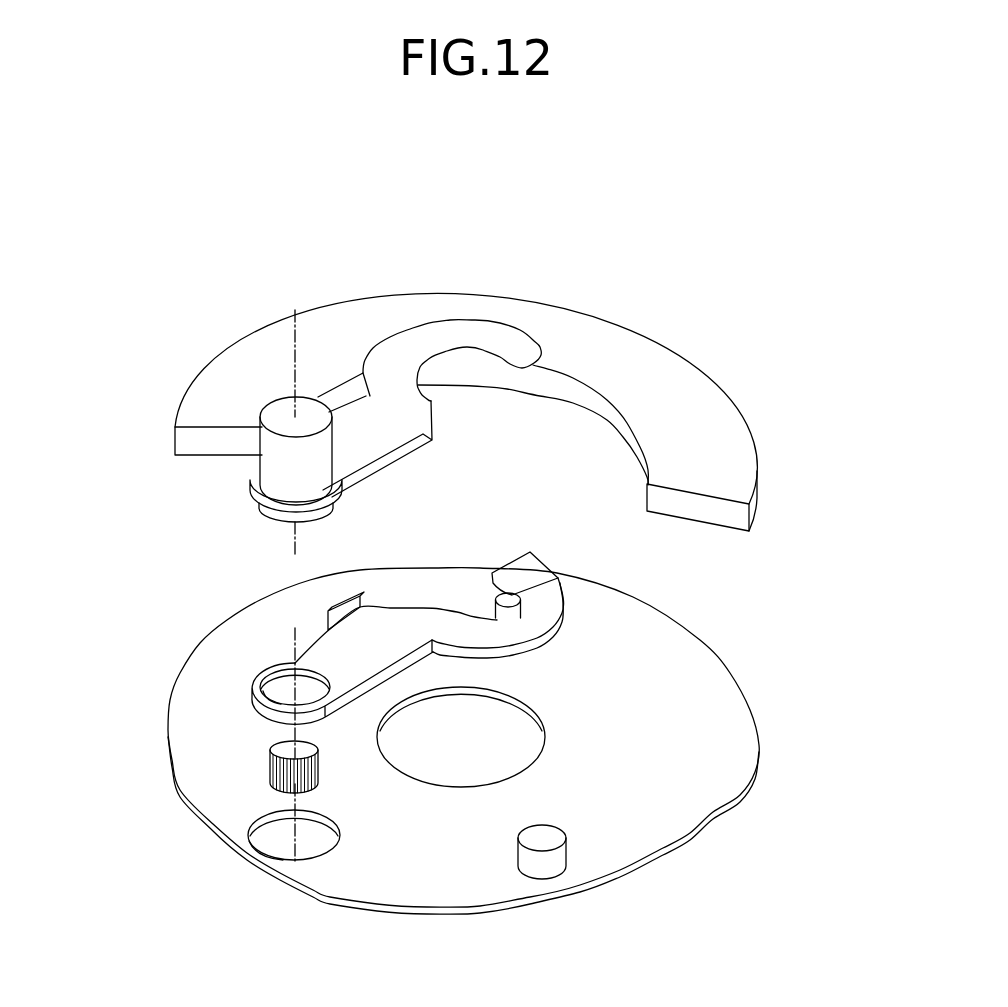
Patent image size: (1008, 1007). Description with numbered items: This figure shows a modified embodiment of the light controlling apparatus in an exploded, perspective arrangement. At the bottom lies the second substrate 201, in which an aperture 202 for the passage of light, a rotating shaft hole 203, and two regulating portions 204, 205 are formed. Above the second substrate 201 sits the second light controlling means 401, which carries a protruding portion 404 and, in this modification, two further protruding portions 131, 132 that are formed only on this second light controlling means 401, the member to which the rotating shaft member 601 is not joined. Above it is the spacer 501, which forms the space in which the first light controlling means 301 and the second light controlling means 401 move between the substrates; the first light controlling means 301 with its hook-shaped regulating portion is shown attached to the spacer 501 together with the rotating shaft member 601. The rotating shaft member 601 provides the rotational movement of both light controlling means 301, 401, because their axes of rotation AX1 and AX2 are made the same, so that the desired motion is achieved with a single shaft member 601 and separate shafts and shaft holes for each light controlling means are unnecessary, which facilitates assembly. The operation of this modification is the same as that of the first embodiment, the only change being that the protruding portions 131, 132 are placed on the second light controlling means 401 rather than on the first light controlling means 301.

The protruding portion 131 is at (560, 577).
The protruding portion 132 is at (333, 603).
The second substrate 201 is at (663, 797).
The aperture 202 is at (440, 774).
The rotating shaft hole 203 is at (258, 840).
The regulating portion 204 is at (548, 838).
The regulating portion 205 is at (280, 752).
The first light controlling means 301 is at (495, 337).
The second light controlling means 401 is at (333, 653).
The protruding portion 404 is at (262, 687).
The spacer 501 is at (670, 390).
The rotating shaft member 601 is at (283, 408).
The axis of rotation AX1 is at (294, 537).
The axis of rotation AX2 is at (293, 638).